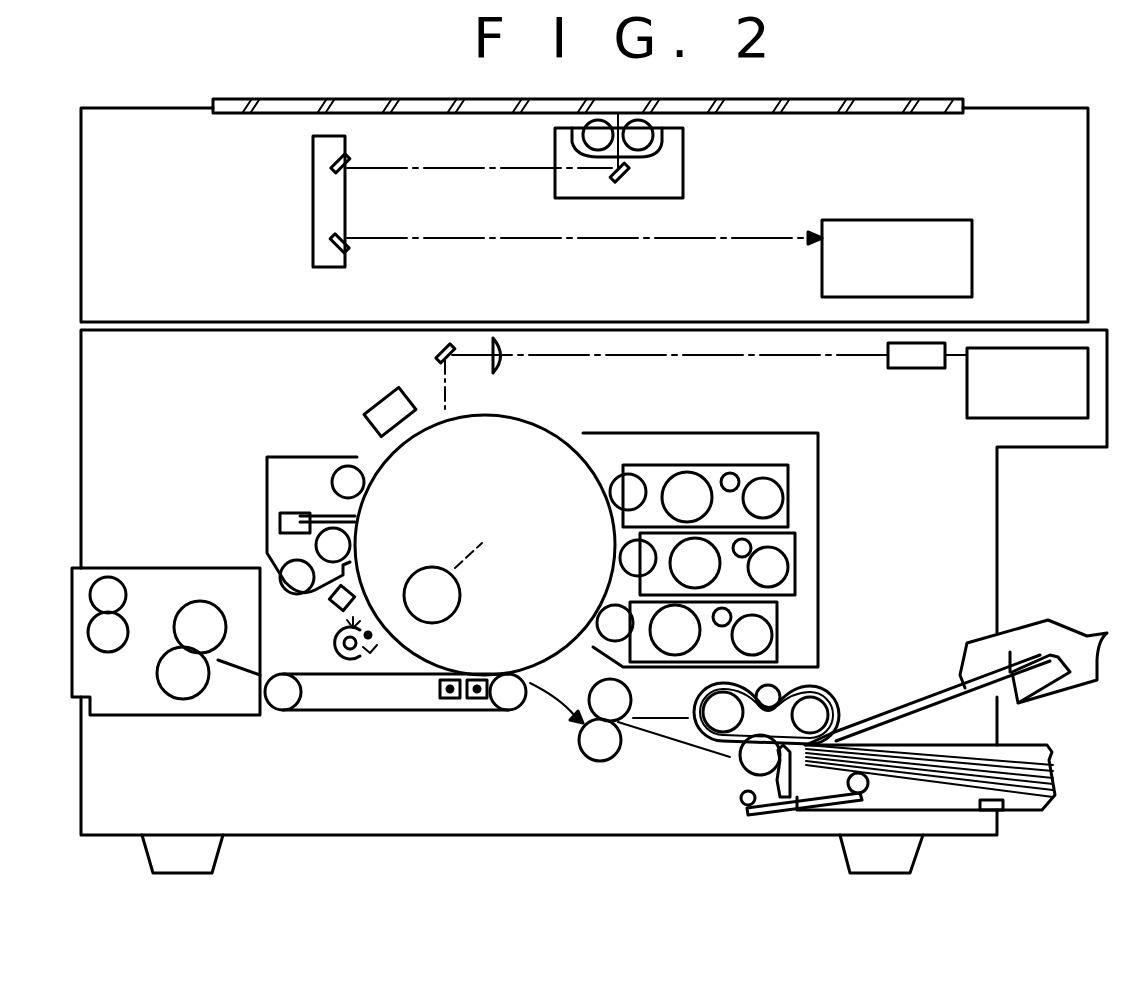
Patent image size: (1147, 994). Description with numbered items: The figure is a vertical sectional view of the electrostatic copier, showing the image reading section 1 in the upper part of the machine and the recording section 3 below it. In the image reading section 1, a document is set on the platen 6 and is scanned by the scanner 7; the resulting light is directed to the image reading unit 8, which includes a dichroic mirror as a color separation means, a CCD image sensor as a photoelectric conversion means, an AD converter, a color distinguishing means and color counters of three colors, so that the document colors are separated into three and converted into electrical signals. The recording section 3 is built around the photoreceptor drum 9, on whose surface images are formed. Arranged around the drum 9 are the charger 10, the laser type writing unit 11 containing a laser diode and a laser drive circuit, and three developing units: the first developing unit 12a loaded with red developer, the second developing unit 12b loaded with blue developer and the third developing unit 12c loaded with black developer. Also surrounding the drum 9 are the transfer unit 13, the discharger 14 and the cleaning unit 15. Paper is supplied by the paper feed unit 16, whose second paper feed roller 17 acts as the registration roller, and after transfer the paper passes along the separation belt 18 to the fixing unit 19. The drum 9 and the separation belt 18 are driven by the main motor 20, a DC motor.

The image reading section 1 is at (298, 222).
The recording section 3 is at (230, 456).
The platen 6 is at (802, 99).
The scanner 7 is at (672, 173).
The image reading unit 8 is at (972, 255).
The photoreceptor drum 9 is at (515, 413).
The charger 10 is at (372, 400).
The laser type writing unit 11 is at (967, 413).
The first developing unit 12a is at (788, 485).
The second developing unit 12b is at (795, 548).
The third developing unit 12c is at (777, 620).
The transfer unit 13 is at (478, 700).
The discharger 14 is at (345, 626).
The cleaning unit 15 is at (287, 457).
The paper feed unit 16 is at (723, 762).
The second paper feed roller 17 is at (600, 762).
The separation belt 18 is at (356, 712).
The fixing unit 19 is at (185, 568).
The main motor 20 is at (460, 598).